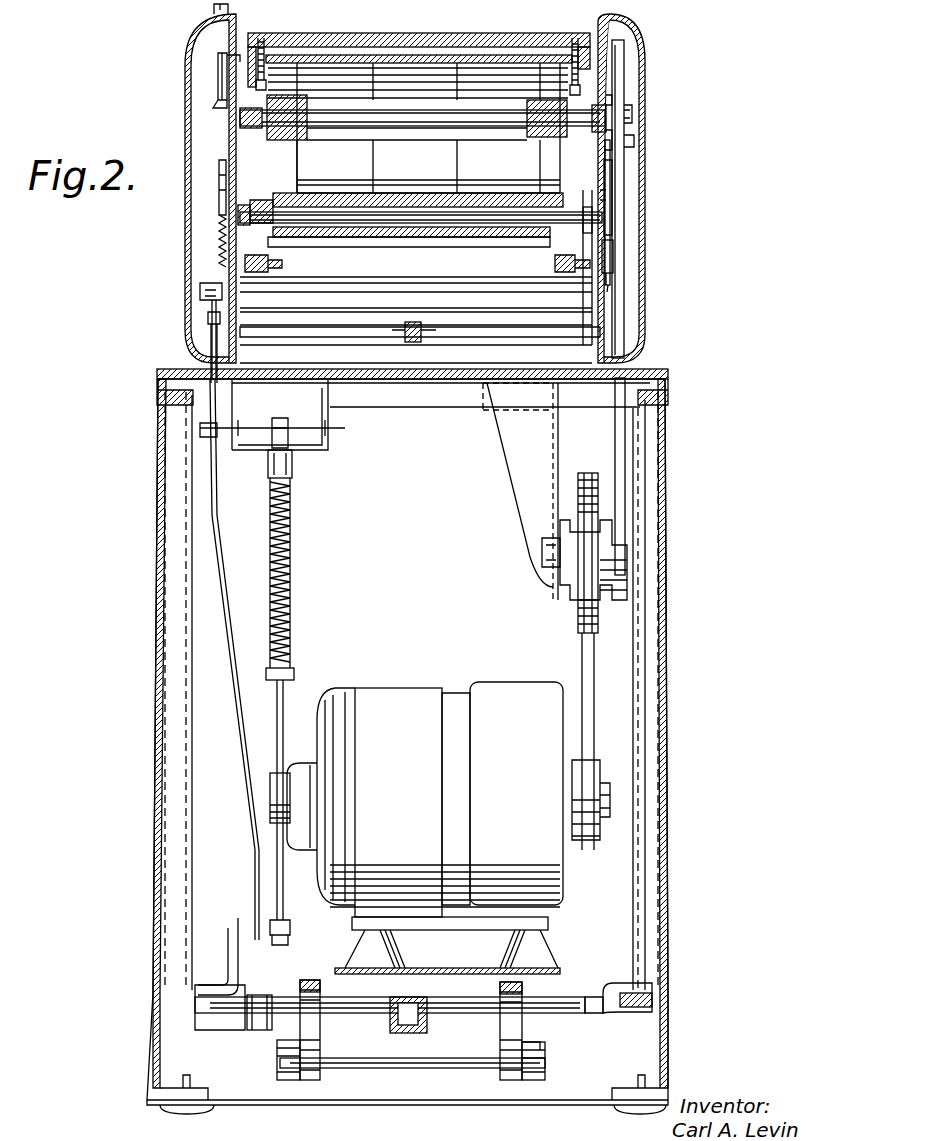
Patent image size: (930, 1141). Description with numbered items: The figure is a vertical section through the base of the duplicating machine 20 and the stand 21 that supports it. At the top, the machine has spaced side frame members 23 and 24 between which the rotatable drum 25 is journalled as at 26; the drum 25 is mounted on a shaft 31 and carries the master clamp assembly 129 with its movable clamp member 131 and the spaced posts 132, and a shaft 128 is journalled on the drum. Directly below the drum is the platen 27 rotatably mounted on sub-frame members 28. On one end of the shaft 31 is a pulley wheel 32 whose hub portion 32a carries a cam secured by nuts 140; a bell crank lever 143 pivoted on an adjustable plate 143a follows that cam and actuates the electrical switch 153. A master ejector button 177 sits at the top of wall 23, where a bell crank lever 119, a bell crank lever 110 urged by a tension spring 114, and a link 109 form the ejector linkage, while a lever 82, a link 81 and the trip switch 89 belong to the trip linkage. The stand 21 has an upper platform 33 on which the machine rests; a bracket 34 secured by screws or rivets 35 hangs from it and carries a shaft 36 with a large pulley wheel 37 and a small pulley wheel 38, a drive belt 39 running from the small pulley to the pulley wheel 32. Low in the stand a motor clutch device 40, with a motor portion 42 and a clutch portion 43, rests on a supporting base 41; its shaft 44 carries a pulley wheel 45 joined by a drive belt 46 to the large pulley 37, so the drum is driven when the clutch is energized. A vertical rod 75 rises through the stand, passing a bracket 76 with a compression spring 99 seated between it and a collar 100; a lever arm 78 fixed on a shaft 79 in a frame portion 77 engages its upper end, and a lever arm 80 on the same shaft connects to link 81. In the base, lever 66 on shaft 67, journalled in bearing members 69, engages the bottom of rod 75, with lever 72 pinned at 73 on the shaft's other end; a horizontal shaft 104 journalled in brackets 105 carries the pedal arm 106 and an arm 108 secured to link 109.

The master ejector button 177 is at (210, 7).
The side frame member 23 is at (205, 30).
The bell crank lever 119 is at (217, 74).
The drum journal 26 is at (240, 118).
The bell crank lever 110 is at (212, 180).
The link 109 is at (222, 218).
The tension spring 114 is at (220, 240).
The trip switch 89 is at (199, 292).
The lever 82 is at (210, 314).
The link 81 is at (210, 340).
The post 132 is at (262, 44).
The master clamp assembly 129 is at (372, 30).
The movable clamp member 131 is at (445, 60).
The rotatable drum 25 is at (470, 42).
The side frame member 24 is at (607, 32).
The pulley wheel 32 is at (626, 62).
The hub portion 32a is at (634, 120).
The nuts 140 is at (636, 142).
The duplicating machine 20 is at (648, 166).
The bell crank lever 143 is at (612, 205).
The plate 143a is at (612, 230).
The electrical switch 153 is at (614, 262).
The sub-frame members 28 is at (250, 290).
The drive belt 39 is at (622, 332).
The upper platform 33 is at (650, 372).
The shaft 128 is at (362, 112).
The drum shaft 31 is at (432, 125).
The platen 27 is at (494, 238).
The lever arm 78 is at (288, 418).
The shaft 79 is at (346, 430).
The frame portion 77 is at (328, 452).
The bracket 76 is at (292, 472).
The compression spring 99 is at (290, 528).
The lever arm 80 is at (200, 432).
The screws or rivets 35 is at (505, 390).
The bracket 34 is at (518, 465).
The shaft 36 is at (548, 568).
The large pulley wheel 37 is at (580, 614).
The small pulley wheel 38 is at (628, 556).
The stand 21 is at (668, 615).
The collar 100 is at (300, 672).
The vertical rod 75 is at (282, 706).
The motor portion 42 is at (345, 693).
The motor clutch device 40 is at (418, 688).
The clutch portion 43 is at (535, 682).
The drive belt 46 is at (590, 690).
The pulley wheel 45 is at (600, 770).
The shaft 44 is at (612, 800).
The supporting base 41 is at (540, 972).
The brackets 105 is at (190, 995).
The arm 108 is at (262, 1030).
The lever 66 is at (278, 1064).
The horizontal shaft 104 is at (372, 1016).
The arm 106 is at (426, 1024).
The pin 73 is at (542, 1046).
The lever 72 is at (547, 1060).
The shaft 67 is at (368, 1068).
The bearing members 69 is at (312, 1082).